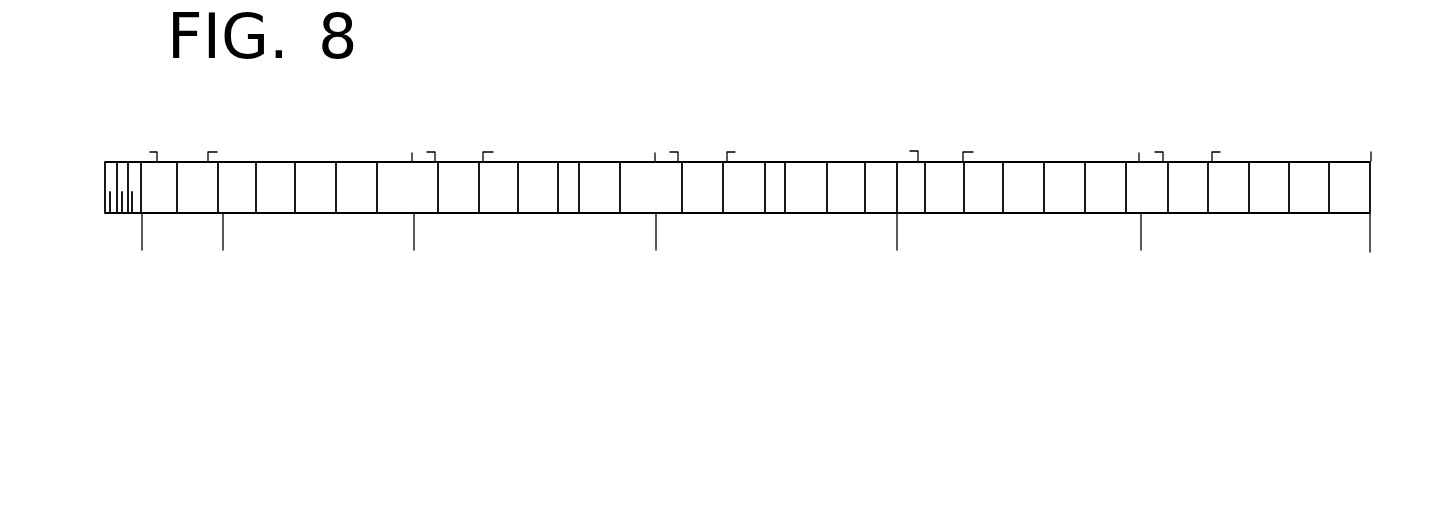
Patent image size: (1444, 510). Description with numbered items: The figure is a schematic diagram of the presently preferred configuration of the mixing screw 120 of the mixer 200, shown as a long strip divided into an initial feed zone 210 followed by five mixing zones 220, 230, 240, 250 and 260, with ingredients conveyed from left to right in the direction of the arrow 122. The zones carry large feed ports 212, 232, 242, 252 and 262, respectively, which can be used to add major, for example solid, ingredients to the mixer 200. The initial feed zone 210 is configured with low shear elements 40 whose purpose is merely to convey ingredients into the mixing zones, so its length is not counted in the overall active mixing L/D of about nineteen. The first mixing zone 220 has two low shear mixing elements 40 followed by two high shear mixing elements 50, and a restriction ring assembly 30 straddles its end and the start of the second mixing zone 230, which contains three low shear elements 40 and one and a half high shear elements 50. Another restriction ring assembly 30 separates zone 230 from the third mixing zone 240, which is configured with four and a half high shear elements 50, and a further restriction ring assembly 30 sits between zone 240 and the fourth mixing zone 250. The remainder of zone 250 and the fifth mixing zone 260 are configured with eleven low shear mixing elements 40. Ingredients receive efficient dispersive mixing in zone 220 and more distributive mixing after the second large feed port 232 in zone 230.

The mixing screw 120 is at (1365, 193).
The arrow 122 is at (482, 287).
The restriction ring assembly 30 is at (395, 167).
The low shear mixing element 40 is at (185, 173).
The high shear mixing element 50 is at (355, 172).
The mixer 200 is at (1311, 245).
The initial feed zone 210 is at (223, 239).
The large feed port 212 is at (197, 160).
The first mixing zone 220 is at (414, 239).
The second mixing zone 230 is at (414, 239).
The large feed port 232 is at (463, 160).
The third mixing zone 240 is at (656, 239).
The large feed port 242 is at (705, 160).
The fourth mixing zone 250 is at (897, 239).
The large feed port 252 is at (943, 160).
The fifth mixing zone 260 is at (1370, 239).
The large feed port 262 is at (1188, 160).